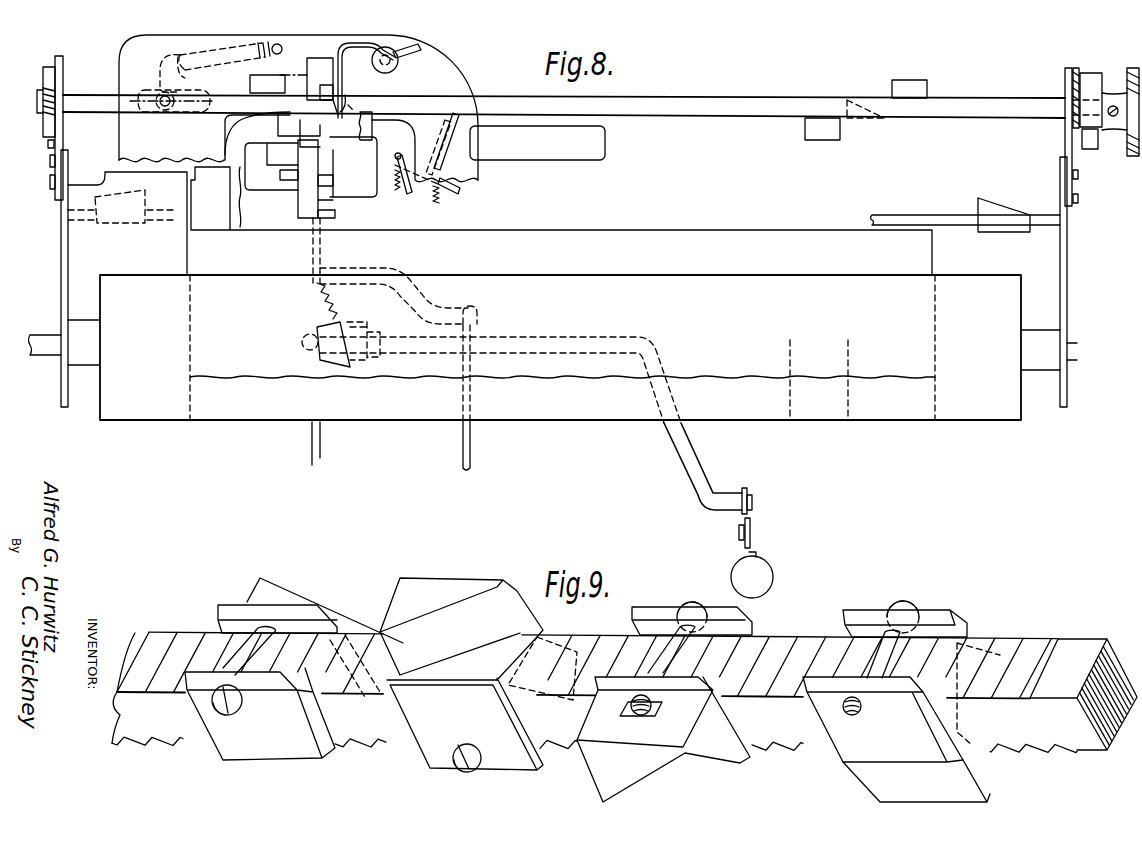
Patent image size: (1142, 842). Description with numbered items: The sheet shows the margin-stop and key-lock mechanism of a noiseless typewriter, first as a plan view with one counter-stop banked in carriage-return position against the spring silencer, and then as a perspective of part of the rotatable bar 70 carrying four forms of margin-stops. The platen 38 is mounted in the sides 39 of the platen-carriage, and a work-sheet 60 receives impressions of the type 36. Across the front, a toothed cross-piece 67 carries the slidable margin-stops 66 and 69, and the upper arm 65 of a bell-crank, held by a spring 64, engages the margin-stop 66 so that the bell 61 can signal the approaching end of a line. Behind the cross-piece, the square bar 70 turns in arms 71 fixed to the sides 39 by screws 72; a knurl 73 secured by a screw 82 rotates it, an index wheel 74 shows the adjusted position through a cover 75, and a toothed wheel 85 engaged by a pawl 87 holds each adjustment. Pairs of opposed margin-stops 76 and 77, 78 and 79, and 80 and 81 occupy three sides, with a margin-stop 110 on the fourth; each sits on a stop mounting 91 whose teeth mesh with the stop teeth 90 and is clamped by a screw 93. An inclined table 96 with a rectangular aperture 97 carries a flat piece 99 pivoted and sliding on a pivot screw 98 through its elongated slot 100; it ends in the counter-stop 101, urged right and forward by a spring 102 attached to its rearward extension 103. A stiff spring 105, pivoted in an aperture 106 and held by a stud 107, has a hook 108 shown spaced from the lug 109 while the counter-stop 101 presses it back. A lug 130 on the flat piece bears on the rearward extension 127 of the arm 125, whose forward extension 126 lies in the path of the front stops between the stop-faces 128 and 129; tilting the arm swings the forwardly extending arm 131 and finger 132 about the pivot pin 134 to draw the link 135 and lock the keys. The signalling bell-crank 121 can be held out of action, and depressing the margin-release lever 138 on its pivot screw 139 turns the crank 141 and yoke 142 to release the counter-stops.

In FIG. 8, the type 36 is at (305, 421).
In FIG. 8, the platen 38 is at (977, 422).
In FIG. 8, the sides of platen-carriage 39 is at (61, 278).
In FIG. 8, the work-sheets 60 is at (250, 421).
In FIG. 8, the bell 61 is at (537, 143).
In FIG. 8, the spring 64 is at (396, 186).
In FIG. 8, the upper arm 65 is at (408, 195).
In FIG. 8, the margin-stop 66 is at (978, 210).
In FIG. 8, the toothed cross-piece 67 is at (952, 228).
In FIG. 8, the margin-stop 69 is at (115, 225).
In FIG. 8, the rotatable bar 70 is at (739, 99).
In FIG. 9, the rotatable bar 70 is at (1085, 645).
In FIG. 8, the bracket arms 71 is at (63, 81).
In FIG. 8, the screws 72 is at (50, 183).
In FIG. 8, the knurl 73 is at (1133, 158).
In FIG. 8, the cylindrical wheel 74 is at (1104, 78).
In FIG. 8, the cover 75 is at (1088, 65).
In FIG. 8, the margin-stop 76 is at (925, 80).
In FIG. 9, the margin-stop 76 is at (633, 785).
In FIG. 8, the margin-stop 77 is at (255, 75).
In FIG. 8, the margin-stop 78 is at (880, 100).
In FIG. 9, the margin-stop 78 is at (435, 579).
In FIG. 8, the margin-stop 79 is at (318, 100).
In FIG. 8, the margin-stop 80 is at (822, 143).
In FIG. 9, the margin-stop 80 is at (280, 594).
In FIG. 8, the margin-stop 81 is at (372, 133).
In FIG. 8, the screw 82 is at (1113, 117).
In FIG. 8, the toothed-wheel 85 is at (44, 124).
In FIG. 8, the pawl 87 is at (48, 147).
In FIG. 9, the stop teeth 90 is at (795, 641).
In FIG. 9, the stop mounting 91 is at (675, 723).
In FIG. 9, the screw 93 is at (232, 714).
In FIG. 8, the inclined table 96 is at (298, 35).
In FIG. 8, the rectangular aperture 97 is at (328, 58).
In FIG. 8, the pivot screw 98 is at (165, 112).
In FIG. 8, the flat piece 99 is at (232, 135).
In FIG. 8, the elongated slot 100 is at (207, 106).
In FIG. 8, the counter-stop 101 is at (344, 95).
In FIG. 8, the spring 102 is at (211, 46).
In FIG. 8, the rearward extension 103 is at (160, 72).
In FIG. 8, the stiff spring 105 is at (342, 74).
In FIG. 8, the aperture 106 is at (410, 52).
In FIG. 8, the stud 107 is at (388, 73).
In FIG. 8, the hook 108 is at (356, 112).
In FIG. 8, the lug 109 is at (330, 149).
In FIG. 9, the margin-stop 110 is at (916, 781).
In FIG. 8, the signalling bell-crank 121 is at (445, 130).
In FIG. 8, the arm 125 is at (298, 205).
In FIG. 8, the forward right-angled extension 126 is at (333, 201).
In FIG. 8, the rearward right-angled extension 127 is at (271, 166).
In FIG. 8, the right stop-face 128 is at (333, 183).
In FIG. 8, the left stop-face 129 is at (298, 181).
In FIG. 8, the forward lug 130 is at (298, 128).
In FIG. 8, the forwardly extending arm 131 is at (320, 262).
In FIG. 8, the right-angled finger 132 is at (425, 285).
In FIG. 8, the pivot pin 134 is at (305, 345).
In FIG. 8, the link 135 is at (472, 458).
In FIG. 8, the margin-release lever 138 is at (753, 556).
In FIG. 8, the pivot screw 139 is at (738, 531).
In FIG. 8, the crank 141 is at (690, 464).
In FIG. 8, the yoke 142 is at (358, 326).